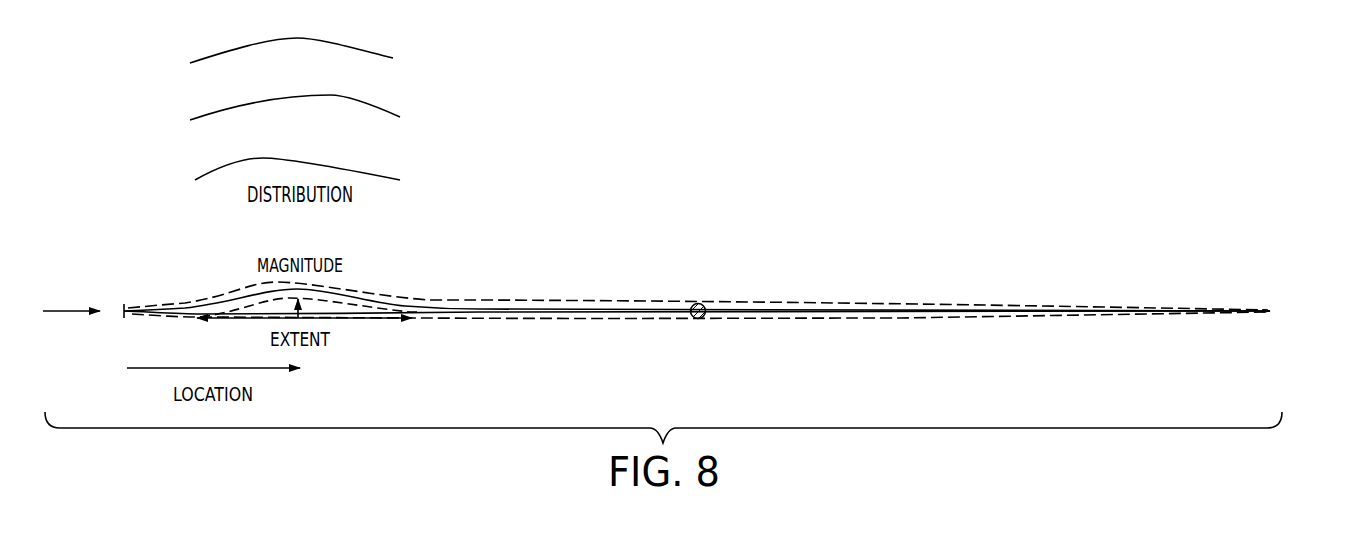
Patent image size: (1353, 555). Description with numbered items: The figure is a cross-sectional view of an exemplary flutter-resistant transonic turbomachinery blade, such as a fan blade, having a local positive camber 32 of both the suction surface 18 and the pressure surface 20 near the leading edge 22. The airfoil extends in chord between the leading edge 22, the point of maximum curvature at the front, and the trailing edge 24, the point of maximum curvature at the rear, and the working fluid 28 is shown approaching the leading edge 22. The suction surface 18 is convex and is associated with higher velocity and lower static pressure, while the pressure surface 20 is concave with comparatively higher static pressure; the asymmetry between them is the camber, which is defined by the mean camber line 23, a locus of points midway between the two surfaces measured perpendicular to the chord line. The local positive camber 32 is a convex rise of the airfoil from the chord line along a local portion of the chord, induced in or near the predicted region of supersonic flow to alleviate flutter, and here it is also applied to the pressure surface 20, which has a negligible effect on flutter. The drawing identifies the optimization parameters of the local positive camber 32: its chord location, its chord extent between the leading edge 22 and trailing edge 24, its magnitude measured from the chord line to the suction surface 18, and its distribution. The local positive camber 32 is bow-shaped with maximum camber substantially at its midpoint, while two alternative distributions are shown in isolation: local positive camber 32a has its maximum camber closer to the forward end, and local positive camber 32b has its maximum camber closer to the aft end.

The suction surface 18 is at (908, 303).
The pressure surface 20 is at (898, 318).
The leading edge 22 is at (124, 310).
The mean camber line 23 is at (480, 310).
The trailing edge 24 is at (1273, 310).
The working fluid 28 is at (63, 310).
The local positive camber 32 is at (393, 59).
The local positive camber 32a is at (400, 180).
The local positive camber 32b is at (400, 117).